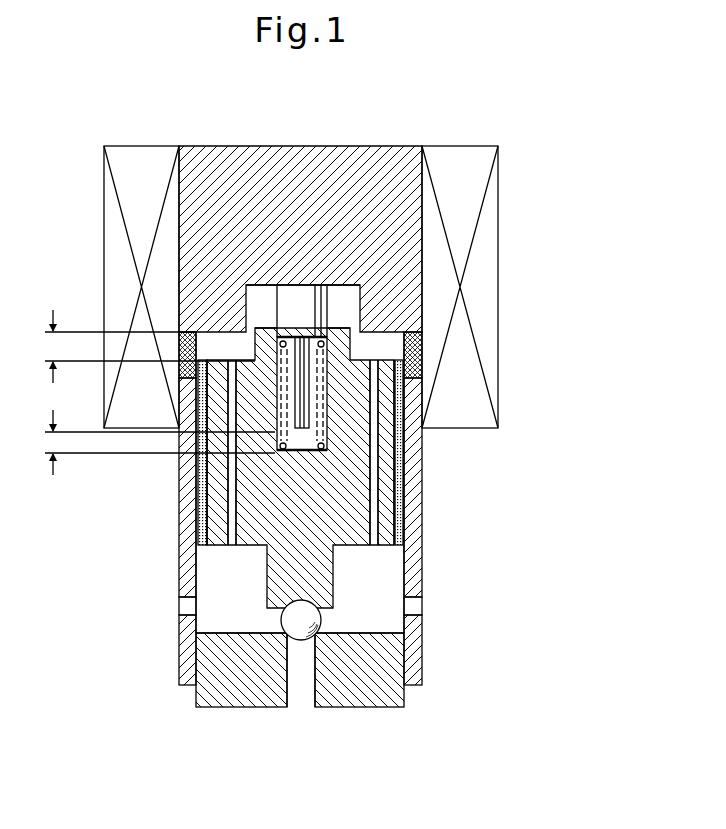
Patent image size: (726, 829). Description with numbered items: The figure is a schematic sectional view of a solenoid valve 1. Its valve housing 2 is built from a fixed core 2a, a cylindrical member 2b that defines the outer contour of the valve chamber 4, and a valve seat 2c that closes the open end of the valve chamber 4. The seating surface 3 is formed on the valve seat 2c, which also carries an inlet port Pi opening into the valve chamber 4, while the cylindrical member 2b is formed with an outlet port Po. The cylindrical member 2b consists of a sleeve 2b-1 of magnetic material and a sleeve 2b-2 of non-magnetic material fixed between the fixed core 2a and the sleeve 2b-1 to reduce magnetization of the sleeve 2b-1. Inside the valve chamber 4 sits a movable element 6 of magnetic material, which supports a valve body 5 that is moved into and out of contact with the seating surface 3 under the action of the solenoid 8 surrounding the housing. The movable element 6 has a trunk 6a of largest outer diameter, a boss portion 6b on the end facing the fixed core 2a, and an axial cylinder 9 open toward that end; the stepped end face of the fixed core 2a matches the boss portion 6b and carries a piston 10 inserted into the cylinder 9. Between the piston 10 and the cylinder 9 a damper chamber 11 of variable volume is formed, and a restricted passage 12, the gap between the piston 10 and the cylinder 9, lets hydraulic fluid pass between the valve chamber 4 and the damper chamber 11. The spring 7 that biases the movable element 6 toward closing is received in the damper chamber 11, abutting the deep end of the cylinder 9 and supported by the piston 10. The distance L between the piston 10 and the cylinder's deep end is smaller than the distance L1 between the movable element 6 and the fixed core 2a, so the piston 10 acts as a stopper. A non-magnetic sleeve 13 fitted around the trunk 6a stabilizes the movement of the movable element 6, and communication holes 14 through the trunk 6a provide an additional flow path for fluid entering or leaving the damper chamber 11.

The solenoid valve 1 is at (522, 155).
The valve housing 2 is at (177, 584).
The fixed core 2a is at (340, 165).
The cylindrical member 2b is at (412, 508).
The sleeve 2b-1 is at (412, 393).
The sleeve 2b-2 is at (410, 354).
The valve seat 2c is at (387, 697).
The seating surface 3 is at (340, 672).
The valve chamber 4 is at (222, 338).
The valve body 5 is at (290, 627).
The movable element 6 is at (240, 510).
The trunk 6a is at (390, 508).
The boss portion 6b is at (263, 328).
The spring 7 is at (290, 337).
The solenoid 8 is at (103, 181).
The cylinder 9 is at (318, 382).
The piston 10 is at (300, 297).
The damper chamber 11 is at (298, 442).
The restricted passage 12 is at (282, 337).
The non-magnetic sleeve 13 is at (180, 477).
The communication holes 14 is at (372, 483).
The outlet port Po is at (177, 610).
The inlet port Pi is at (297, 700).
The distance L is at (148, 442).
The distance L1 is at (132, 346).